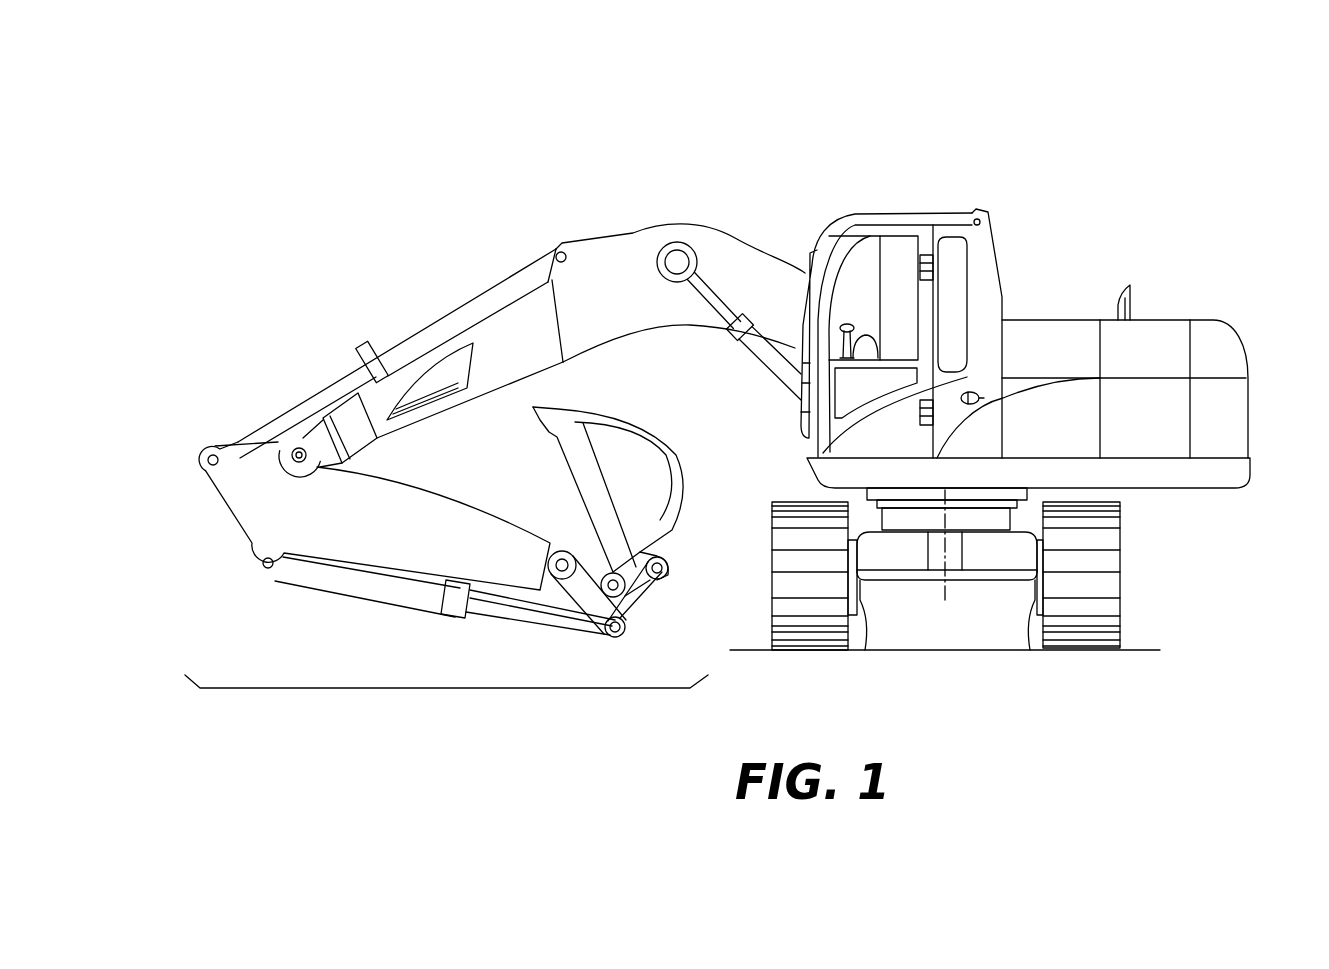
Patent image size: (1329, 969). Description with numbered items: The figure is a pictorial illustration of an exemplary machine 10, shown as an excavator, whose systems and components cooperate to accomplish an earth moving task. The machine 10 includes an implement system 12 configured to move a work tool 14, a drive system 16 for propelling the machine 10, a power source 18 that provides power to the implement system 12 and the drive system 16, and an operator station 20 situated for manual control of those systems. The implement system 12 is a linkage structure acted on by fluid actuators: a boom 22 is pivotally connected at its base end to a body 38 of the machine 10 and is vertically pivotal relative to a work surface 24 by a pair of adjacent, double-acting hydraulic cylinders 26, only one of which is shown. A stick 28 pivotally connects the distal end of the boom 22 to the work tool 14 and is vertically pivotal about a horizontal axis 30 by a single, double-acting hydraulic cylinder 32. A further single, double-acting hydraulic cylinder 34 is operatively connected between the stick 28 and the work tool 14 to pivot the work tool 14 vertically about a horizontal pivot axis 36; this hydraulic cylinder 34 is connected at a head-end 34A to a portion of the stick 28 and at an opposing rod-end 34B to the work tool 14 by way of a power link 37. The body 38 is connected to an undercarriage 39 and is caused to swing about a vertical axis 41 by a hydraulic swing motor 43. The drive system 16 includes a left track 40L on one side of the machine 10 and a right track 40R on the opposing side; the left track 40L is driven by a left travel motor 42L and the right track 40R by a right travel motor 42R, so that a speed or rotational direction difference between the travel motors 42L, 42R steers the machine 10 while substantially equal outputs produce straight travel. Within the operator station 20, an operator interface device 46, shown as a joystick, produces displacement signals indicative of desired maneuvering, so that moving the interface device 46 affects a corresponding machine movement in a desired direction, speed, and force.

The machine 10 is at (1162, 154).
The implement system 12 is at (432, 690).
The work tool 14 is at (633, 495).
The drive system 16 is at (1220, 647).
The power source 18 is at (1131, 420).
The operator station 20 is at (950, 304).
The boom 22 is at (611, 312).
The work surface 24 is at (1148, 647).
The hydraulic cylinders 26 is at (760, 368).
The stick 28 is at (383, 532).
The horizontal axis 30 is at (297, 453).
The hydraulic cylinder 32 is at (477, 308).
The hydraulic cylinder 34 is at (423, 616).
The head-end 34A is at (302, 570).
The rod-end 34B is at (550, 613).
The horizontal pivot axis 36 is at (648, 550).
The power link 37 is at (637, 598).
The body 38 is at (1238, 470).
The undercarriage 39 is at (1000, 560).
The left track 40L is at (771, 557).
The right track 40R is at (1121, 560).
The vertical axis 41 is at (933, 593).
The left travel motor 42L is at (862, 600).
The right travel motor 42R is at (1030, 607).
The hydraulic swing motor 43 is at (995, 510).
The operator interface device 46 is at (862, 343).